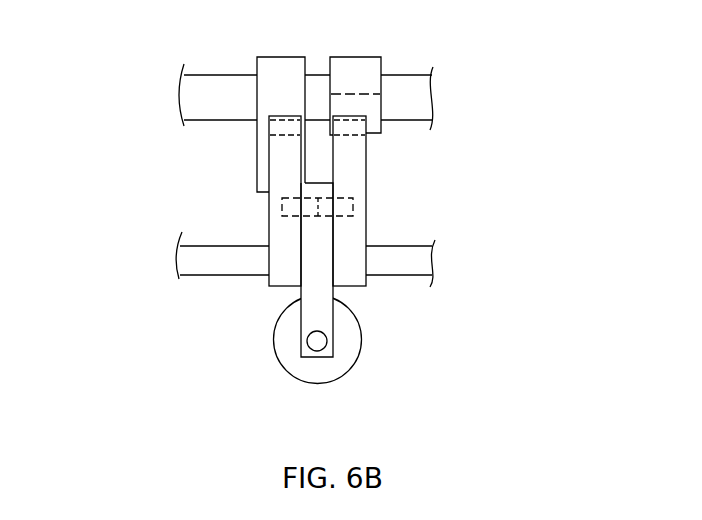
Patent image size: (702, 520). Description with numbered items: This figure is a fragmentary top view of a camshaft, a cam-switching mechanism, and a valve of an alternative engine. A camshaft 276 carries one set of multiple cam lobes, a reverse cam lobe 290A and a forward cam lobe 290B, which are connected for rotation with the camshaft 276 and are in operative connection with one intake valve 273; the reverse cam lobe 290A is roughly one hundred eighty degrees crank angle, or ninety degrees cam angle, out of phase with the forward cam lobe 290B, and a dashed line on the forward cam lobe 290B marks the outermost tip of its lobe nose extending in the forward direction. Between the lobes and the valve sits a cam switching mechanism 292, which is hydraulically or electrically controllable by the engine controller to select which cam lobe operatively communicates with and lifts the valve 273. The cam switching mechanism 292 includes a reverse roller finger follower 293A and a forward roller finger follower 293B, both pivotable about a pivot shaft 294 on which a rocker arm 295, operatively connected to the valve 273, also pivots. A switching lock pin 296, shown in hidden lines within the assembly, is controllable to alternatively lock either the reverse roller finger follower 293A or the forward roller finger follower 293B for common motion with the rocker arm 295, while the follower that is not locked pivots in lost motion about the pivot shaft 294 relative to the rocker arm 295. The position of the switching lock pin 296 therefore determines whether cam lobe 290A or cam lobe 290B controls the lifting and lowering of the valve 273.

The camshaft 276 is at (202, 74).
The pivot shaft 294 is at (210, 276).
The intake valve 273 is at (288, 377).
The rocker arm 295 is at (333, 296).
The reverse cam lobe 290A is at (273, 57).
The forward cam lobe 290B is at (382, 58).
The reverse roller finger follower 293A is at (268, 232).
The forward roller finger follower 293B is at (367, 226).
The switching lock pin 296 is at (307, 203).
The cam switching mechanism 292 is at (424, 176).